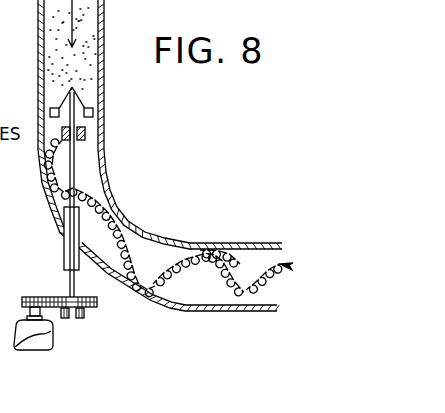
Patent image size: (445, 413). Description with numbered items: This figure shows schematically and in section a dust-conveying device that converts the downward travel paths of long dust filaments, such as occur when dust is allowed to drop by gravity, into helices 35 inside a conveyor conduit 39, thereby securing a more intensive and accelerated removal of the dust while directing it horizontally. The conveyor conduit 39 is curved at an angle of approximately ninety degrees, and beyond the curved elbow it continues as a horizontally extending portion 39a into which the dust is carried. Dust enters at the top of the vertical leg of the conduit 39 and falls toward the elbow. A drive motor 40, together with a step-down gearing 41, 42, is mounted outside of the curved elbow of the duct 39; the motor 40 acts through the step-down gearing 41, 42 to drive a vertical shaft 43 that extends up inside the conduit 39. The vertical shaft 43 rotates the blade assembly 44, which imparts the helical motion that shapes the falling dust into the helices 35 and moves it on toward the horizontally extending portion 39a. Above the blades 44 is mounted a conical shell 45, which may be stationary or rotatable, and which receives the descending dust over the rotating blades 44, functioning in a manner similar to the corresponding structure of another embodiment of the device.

The helices 35 is at (245, 247).
The conveyor conduit 39 is at (108, 187).
The horizontally extending portion 39a is at (223, 312).
The drive motor 40 is at (50, 339).
The step-down gearing 41 is at (35, 297).
The step-down gearing 42 is at (98, 302).
The vertical shaft 43 is at (75, 168).
The blade assembly 44 is at (90, 118).
The conical shell 45 is at (84, 103).